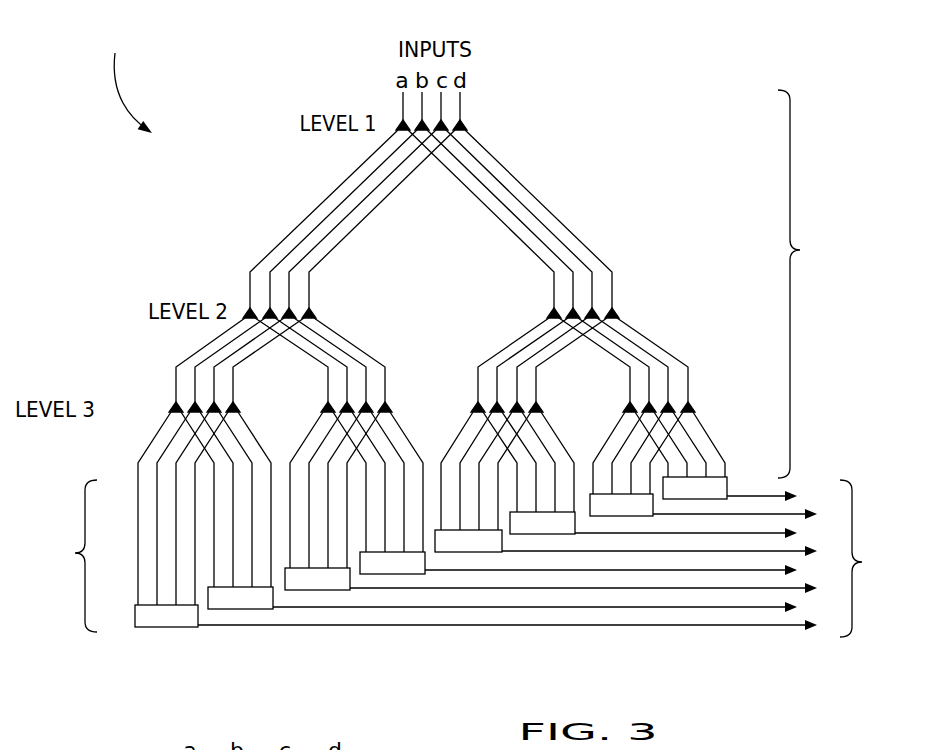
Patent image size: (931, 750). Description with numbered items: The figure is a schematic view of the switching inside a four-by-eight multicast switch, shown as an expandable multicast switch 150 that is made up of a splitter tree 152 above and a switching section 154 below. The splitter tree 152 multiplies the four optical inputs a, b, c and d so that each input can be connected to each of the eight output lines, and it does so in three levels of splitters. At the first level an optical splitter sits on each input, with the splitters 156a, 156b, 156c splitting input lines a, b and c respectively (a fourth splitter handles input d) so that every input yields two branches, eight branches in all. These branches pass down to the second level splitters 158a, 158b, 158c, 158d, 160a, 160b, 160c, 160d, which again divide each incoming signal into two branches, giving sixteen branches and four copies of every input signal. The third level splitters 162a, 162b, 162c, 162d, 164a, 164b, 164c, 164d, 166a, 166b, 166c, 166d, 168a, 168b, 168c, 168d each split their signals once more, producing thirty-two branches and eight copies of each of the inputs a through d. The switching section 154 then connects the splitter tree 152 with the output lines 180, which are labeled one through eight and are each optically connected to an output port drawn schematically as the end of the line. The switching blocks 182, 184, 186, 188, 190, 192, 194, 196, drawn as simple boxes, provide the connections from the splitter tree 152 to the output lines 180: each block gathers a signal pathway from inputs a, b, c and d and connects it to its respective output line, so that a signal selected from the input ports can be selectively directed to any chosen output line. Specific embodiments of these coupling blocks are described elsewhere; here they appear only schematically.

The expandable multicast switch 150 is at (128, 79).
The splitter tree 152 is at (808, 284).
The switching section 154 is at (63, 556).
The splitter 156a is at (400, 126).
The splitter 156b is at (420, 130).
The splitter 156c is at (443, 125).
The level 2 splitter 158a is at (247, 313).
The level 2 splitter 158b is at (271, 310).
The level 2 splitter 158c is at (291, 306).
The level 2 splitter 158d is at (311, 314).
The level 2 splitter 160a is at (552, 313).
The level 2 splitter 160b is at (571, 312).
The level 2 splitter 160c is at (594, 313).
The level 2 splitter 160d is at (614, 314).
The level 3 splitter 162a is at (175, 410).
The level 3 splitter 162b is at (193, 412).
The level 3 splitter 162c is at (214, 407).
The level 3 splitter 162d is at (234, 409).
The level 3 splitter 164a is at (324, 408).
The level 3 splitter 164b is at (345, 407).
The level 3 splitter 164c is at (365, 407).
The level 3 splitter 164d is at (388, 408).
The level 3 splitter 166a is at (477, 410).
The level 3 splitter 166b is at (497, 407).
The level 3 splitter 166c is at (518, 407).
The level 3 splitter 166d is at (538, 409).
The level 3 splitter 168a is at (628, 409).
The level 3 splitter 168b is at (647, 407).
The level 3 splitter 168c is at (669, 408).
The level 3 splitter 168d is at (690, 410).
The output lines 180 is at (850, 559).
The switching block 182 is at (729, 484).
The switching block 184 is at (620, 518).
The switching block 186 is at (528, 535).
The switching block 188 is at (452, 553).
The switching block 190 is at (417, 575).
The switching block 192 is at (325, 591).
The switching block 194 is at (248, 610).
The switching block 196 is at (160, 628).